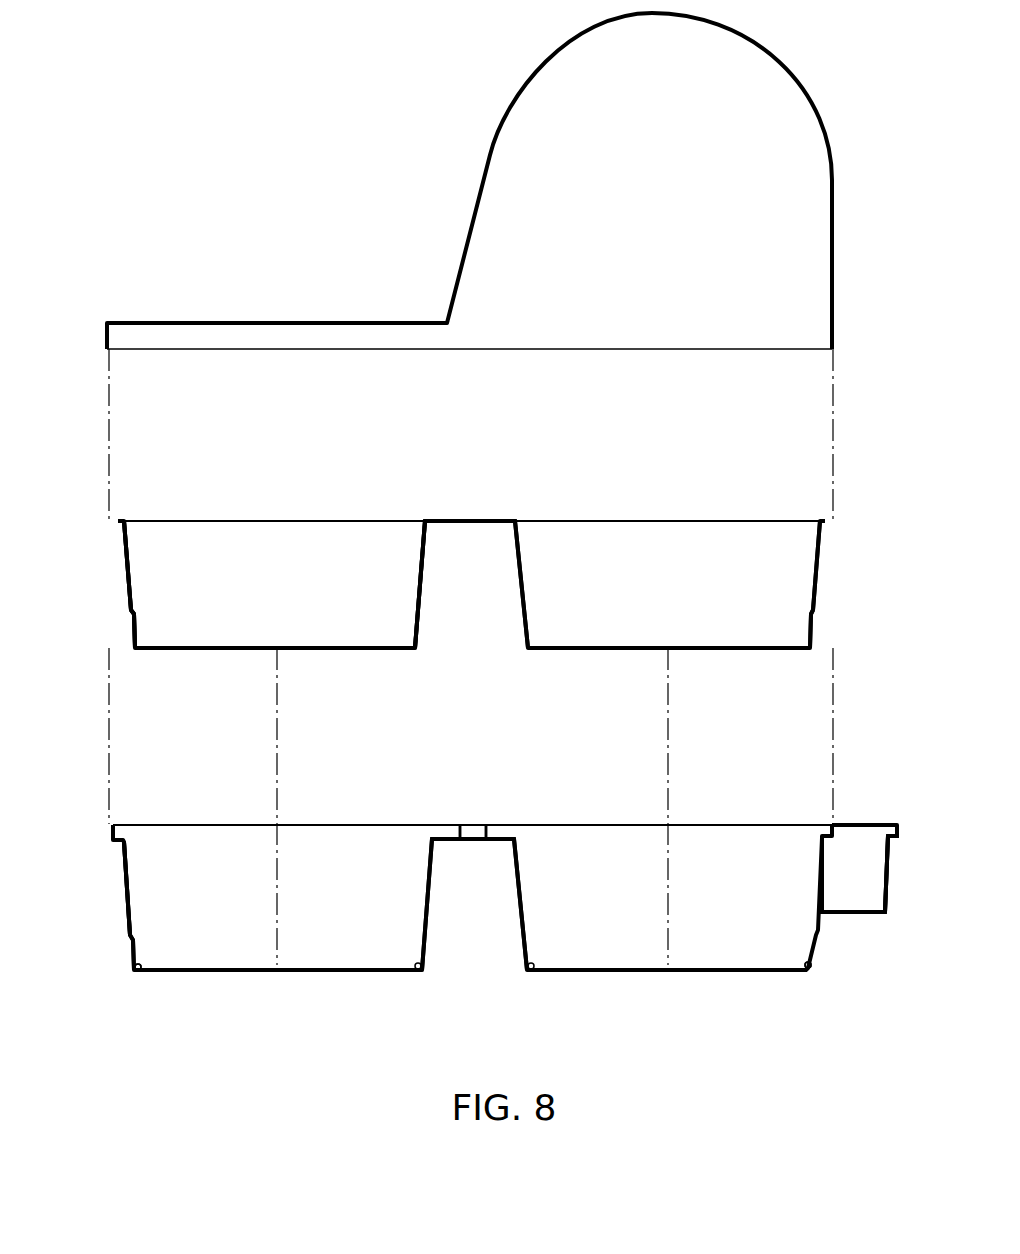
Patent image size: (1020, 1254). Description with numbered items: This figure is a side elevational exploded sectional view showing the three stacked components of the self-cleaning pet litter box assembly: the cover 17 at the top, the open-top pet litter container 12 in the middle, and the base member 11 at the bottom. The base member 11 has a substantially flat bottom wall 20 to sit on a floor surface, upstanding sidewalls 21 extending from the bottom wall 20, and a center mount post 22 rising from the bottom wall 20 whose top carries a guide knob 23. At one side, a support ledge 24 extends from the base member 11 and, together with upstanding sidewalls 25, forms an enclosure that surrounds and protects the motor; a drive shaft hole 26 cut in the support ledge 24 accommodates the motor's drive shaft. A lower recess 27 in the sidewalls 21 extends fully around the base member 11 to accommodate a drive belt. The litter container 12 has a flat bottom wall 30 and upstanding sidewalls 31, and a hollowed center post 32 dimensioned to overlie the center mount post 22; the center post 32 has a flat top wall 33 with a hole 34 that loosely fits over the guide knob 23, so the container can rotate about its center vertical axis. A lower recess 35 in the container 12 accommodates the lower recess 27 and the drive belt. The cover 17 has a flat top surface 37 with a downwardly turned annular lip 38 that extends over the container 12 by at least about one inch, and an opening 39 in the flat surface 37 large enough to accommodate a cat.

The base member 11 is at (130, 924).
The open-top pet litter container 12 is at (126, 597).
The cover 17 is at (117, 322).
The bottom wall 20 is at (343, 973).
The sidewalls 21 is at (125, 871).
The center mount post 22 is at (428, 895).
The guide knob 23 is at (472, 840).
The support ledge 24 is at (838, 910).
The upstanding sidewalls 25 is at (889, 885).
The drive shaft hole 26 is at (857, 913).
The lower recess 27 is at (135, 962).
The flat bottom wall 30 is at (312, 652).
The upstanding sidewalls 31 is at (122, 554).
The hollowed center post 32 is at (513, 579).
The flat top wall 33 is at (425, 520).
The hole 34 is at (470, 520).
The lower recess 35 is at (131, 643).
The flat top surface 37 is at (147, 322).
The downwardly turned annular lip 38 is at (106, 340).
The opening 39 is at (312, 322).